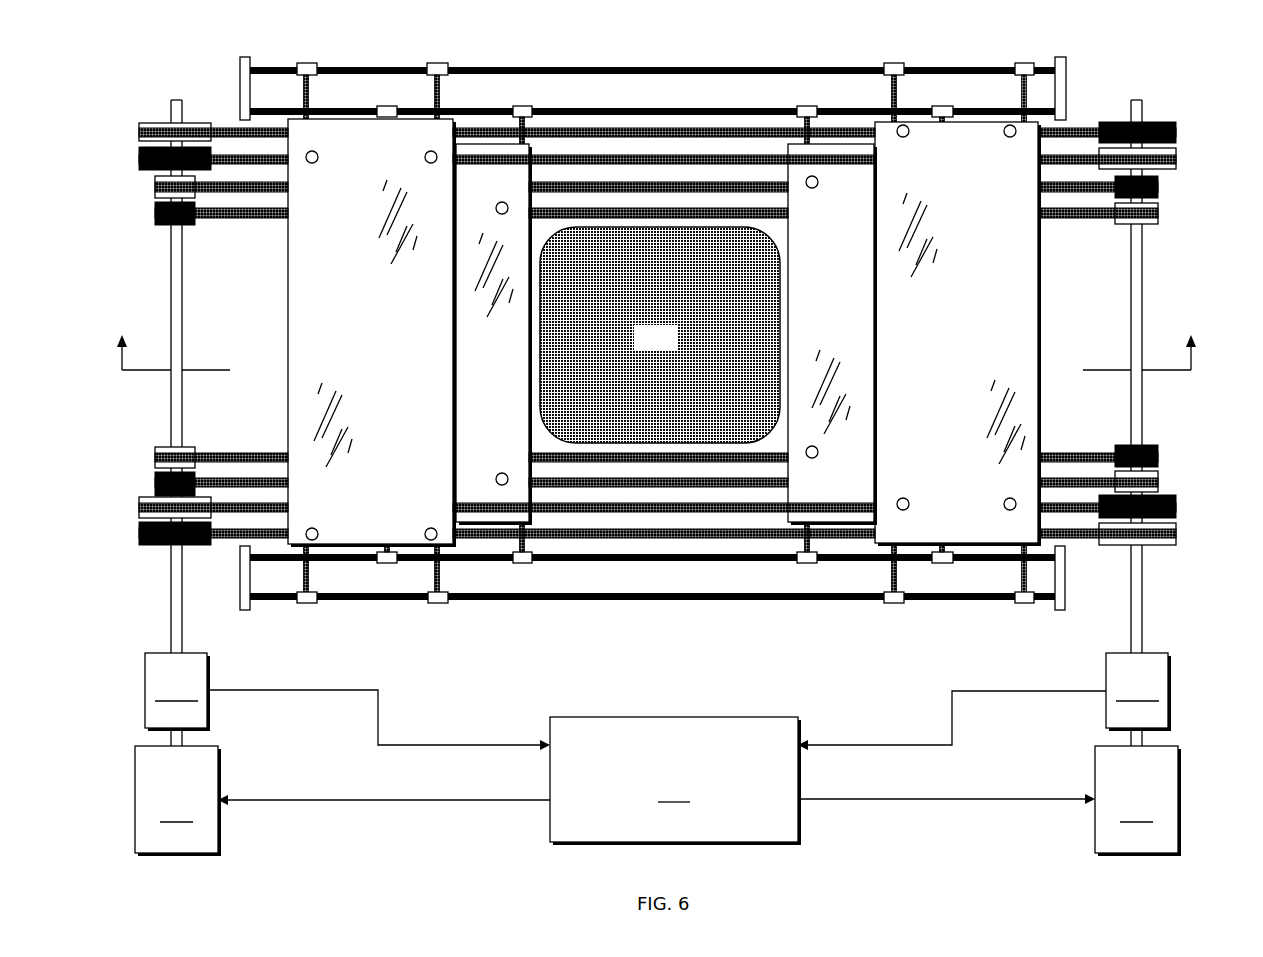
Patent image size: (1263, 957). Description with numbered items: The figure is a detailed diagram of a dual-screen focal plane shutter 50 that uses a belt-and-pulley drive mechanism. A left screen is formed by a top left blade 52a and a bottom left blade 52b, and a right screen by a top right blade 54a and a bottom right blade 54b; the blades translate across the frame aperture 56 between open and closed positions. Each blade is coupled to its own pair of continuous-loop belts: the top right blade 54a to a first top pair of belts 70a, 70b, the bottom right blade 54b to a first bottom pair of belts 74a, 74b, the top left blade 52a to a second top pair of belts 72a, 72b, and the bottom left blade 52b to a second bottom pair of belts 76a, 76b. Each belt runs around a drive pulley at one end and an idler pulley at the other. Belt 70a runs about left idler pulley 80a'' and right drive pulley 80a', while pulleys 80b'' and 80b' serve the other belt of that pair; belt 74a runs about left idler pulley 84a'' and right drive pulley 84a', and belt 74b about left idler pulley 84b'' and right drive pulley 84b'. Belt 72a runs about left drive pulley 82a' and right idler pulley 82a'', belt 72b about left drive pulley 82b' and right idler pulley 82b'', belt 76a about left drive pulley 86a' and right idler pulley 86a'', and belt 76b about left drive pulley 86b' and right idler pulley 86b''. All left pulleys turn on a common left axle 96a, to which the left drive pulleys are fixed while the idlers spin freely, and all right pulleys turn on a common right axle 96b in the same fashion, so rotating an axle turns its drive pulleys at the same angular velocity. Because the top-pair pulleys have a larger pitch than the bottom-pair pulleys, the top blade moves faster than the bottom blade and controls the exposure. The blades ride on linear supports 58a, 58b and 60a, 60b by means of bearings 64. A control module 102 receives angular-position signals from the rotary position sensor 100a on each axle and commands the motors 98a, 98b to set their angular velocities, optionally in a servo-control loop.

The dual-screen focal plane shutter 50 is at (658, 458).
The top left blade 52a is at (406, 342).
The bottom left blade 52b is at (501, 374).
The top right blade 54a is at (958, 344).
The bottom right blade 54b is at (849, 304).
The frame aperture 56 is at (668, 346).
The linear support 58a is at (627, 67).
The linear support 58b is at (617, 600).
The linear support 60a is at (648, 107).
The linear support 60b is at (640, 560).
The bearings 64 is at (312, 604).
The first belt of first top pair 70a is at (1080, 125).
The second belt of first top pair 70b is at (137, 505).
The first belt of second top pair 72a is at (140, 162).
The second belt of second top pair 72b is at (225, 538).
The first belt of first bottom pair 74a is at (1158, 187).
The second belt of first bottom pair 74b is at (1060, 450).
The first belt of second bottom pair 76a is at (270, 220).
The second belt of second bottom pair 76b is at (1158, 482).
The right drive pulley 80a' is at (1163, 113).
The left idler pulley 80a'' is at (149, 112).
The right drive pulley 80b' is at (1174, 509).
The left idler pulley 80b'' is at (135, 487).
The left drive pulley 82a' is at (137, 172).
The right idler pulley 82a'' is at (1175, 158).
The left drive pulley 82b' is at (148, 552).
The right idler pulley 82b'' is at (1166, 554).
The right drive pulley 84a' is at (1186, 218).
The left idler pulley 84a'' is at (127, 212).
The right drive pulley 84b' is at (1171, 425).
The left idler pulley 84b'' is at (140, 426).
The left drive pulley 86a' is at (141, 241).
The right idler pulley 86a'' is at (1173, 244).
The left drive pulley 86b' is at (126, 457).
The right idler pulley 86b'' is at (1187, 451).
The left axle 96a is at (168, 612).
The right axle 96b is at (1143, 612).
The motor 98a is at (177, 800).
The motor 98b is at (1137, 800).
The left rotary position sensor 100a is at (657, 691).
The control module 102 is at (360, 842).